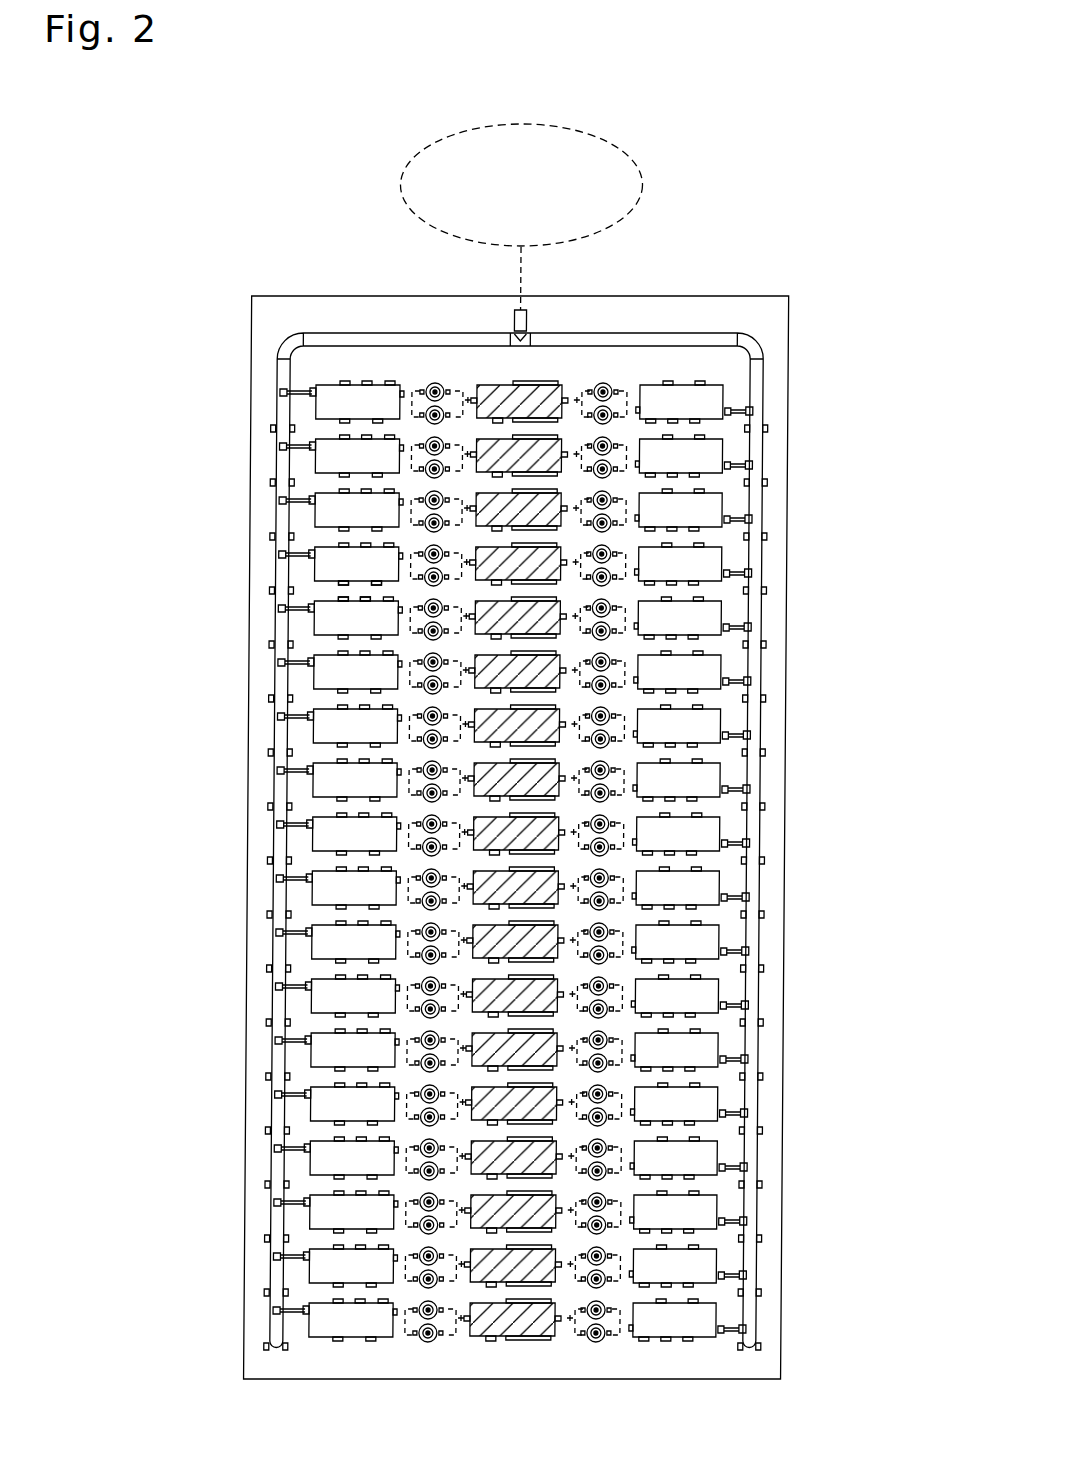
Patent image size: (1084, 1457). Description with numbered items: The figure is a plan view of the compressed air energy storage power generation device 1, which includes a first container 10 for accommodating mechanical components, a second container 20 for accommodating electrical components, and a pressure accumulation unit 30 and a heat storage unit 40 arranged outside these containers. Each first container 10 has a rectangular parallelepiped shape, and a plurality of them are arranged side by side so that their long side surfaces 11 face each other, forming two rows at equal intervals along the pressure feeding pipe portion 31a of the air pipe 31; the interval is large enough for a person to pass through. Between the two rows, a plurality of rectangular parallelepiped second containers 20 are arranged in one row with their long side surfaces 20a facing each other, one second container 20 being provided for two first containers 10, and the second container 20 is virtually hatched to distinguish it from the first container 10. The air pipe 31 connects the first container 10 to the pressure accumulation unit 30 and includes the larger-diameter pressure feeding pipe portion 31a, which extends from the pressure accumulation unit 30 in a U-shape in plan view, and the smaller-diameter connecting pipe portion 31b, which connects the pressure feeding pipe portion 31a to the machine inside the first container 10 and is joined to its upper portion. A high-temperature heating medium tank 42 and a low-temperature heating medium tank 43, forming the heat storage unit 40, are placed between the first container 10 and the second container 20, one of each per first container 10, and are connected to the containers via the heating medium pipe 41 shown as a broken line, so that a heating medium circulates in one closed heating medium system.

The CAES power generation device 1 is at (739, 186).
The first container 10 is at (316, 518).
The long side surface 11 is at (338, 600).
The second container 20 is at (560, 672).
The long side surface 20a is at (542, 757).
The pressure accumulation unit 30 is at (496, 201).
The air pipe 31 is at (613, 841).
The pressure feeding pipe portion 31a is at (760, 810).
The connecting pipe portion 31b is at (742, 951).
The heat storage unit 40 is at (512, 879).
The heating medium pipe 41 is at (413, 1165).
The high-temperature heating medium tank 42 is at (440, 1340).
The low-temperature heating medium tank 43 is at (430, 1312).